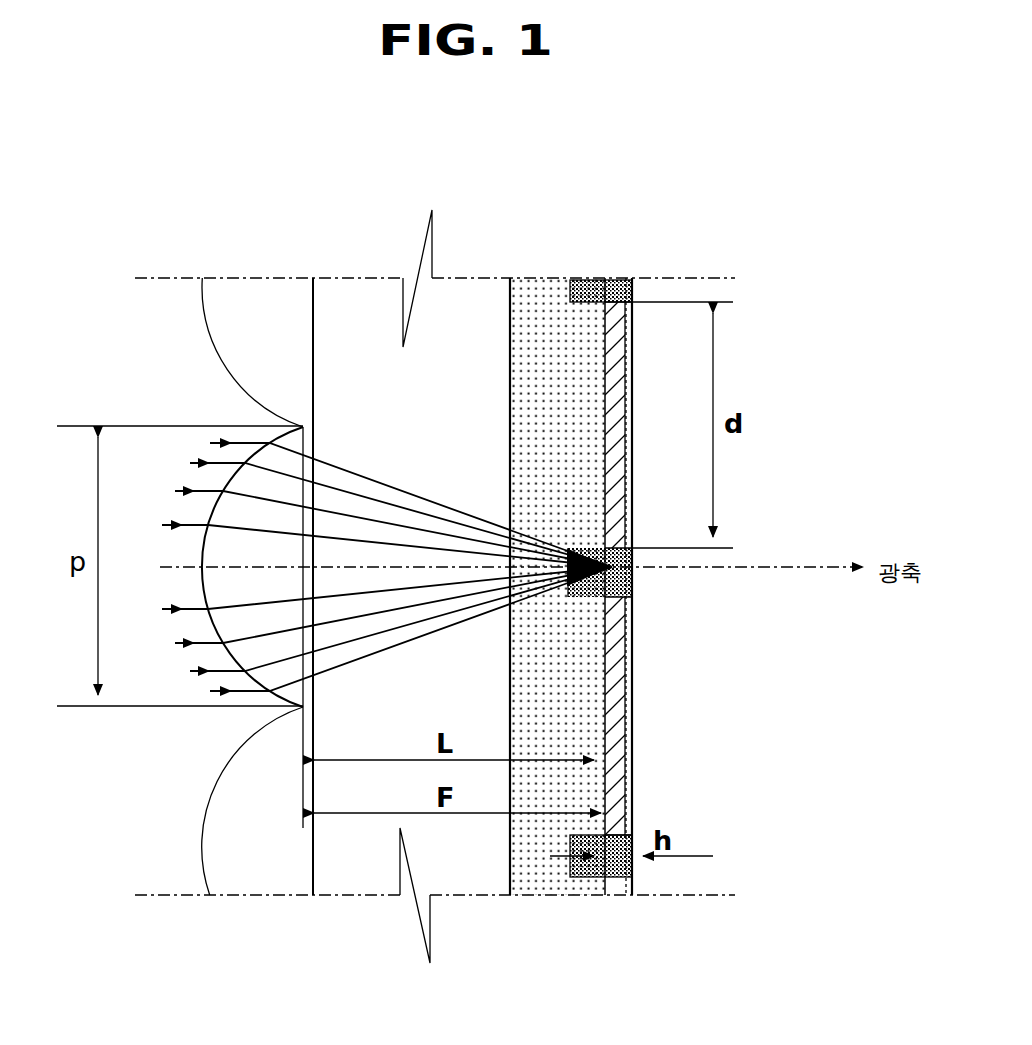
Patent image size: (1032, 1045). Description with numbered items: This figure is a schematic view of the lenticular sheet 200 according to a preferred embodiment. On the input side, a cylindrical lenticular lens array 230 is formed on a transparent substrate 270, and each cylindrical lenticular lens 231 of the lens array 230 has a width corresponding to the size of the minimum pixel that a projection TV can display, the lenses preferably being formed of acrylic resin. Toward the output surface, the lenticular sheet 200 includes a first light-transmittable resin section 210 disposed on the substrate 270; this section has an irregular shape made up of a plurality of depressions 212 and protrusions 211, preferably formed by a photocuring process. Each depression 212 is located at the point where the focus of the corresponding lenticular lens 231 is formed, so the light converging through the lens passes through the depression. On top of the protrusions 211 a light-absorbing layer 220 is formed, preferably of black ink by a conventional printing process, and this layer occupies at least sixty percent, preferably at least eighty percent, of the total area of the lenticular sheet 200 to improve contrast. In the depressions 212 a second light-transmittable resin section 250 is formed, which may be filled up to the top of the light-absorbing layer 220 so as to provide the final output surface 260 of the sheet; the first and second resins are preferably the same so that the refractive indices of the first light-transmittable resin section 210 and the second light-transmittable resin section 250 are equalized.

The lenticular sheet 200 is at (497, 225).
The first light-transmittable resin section 210 is at (538, 895).
The protrusions 211 is at (627, 660).
The depressions 212 is at (633, 597).
The light-absorbing layer 220 is at (622, 783).
The cylindrical lenticular lens array 230 is at (195, 846).
The cylindrical lenticular lens 231 is at (207, 800).
The second light-transmittable resin section 250 is at (615, 877).
The final output surface 260 is at (633, 728).
The transparent substrate 270 is at (360, 895).